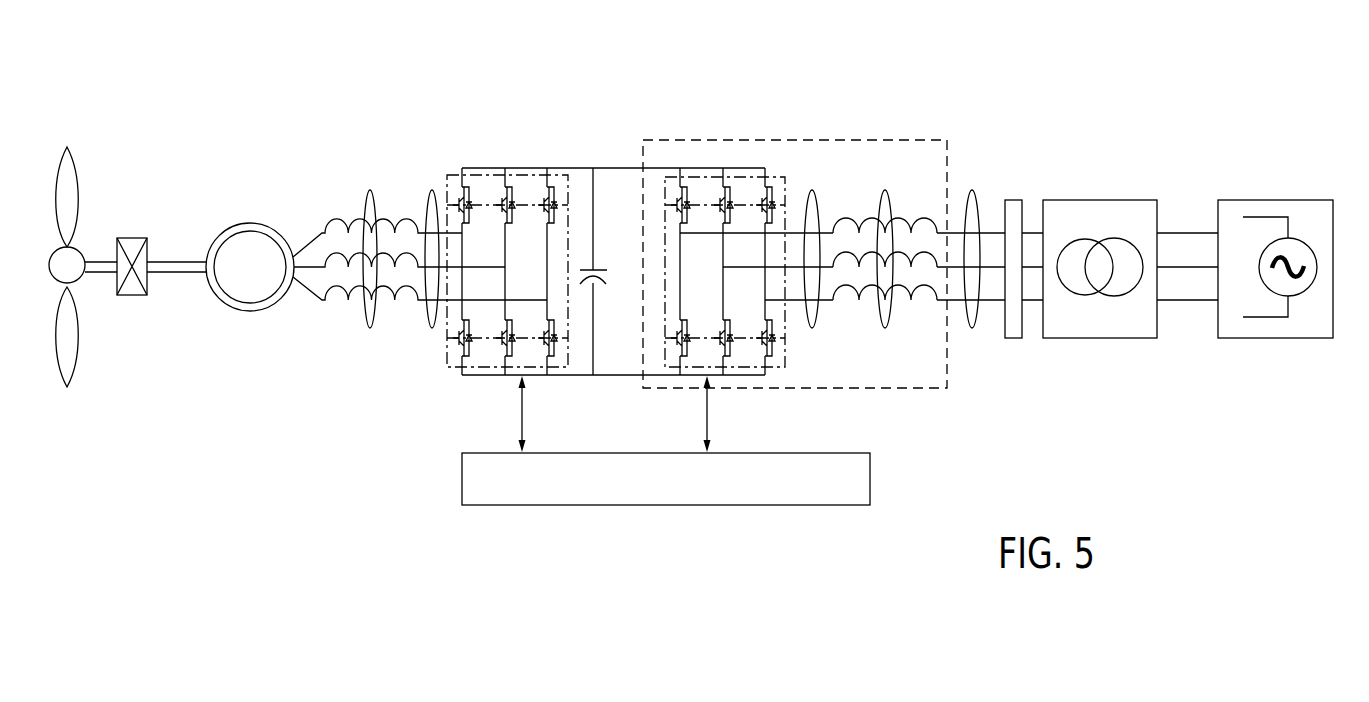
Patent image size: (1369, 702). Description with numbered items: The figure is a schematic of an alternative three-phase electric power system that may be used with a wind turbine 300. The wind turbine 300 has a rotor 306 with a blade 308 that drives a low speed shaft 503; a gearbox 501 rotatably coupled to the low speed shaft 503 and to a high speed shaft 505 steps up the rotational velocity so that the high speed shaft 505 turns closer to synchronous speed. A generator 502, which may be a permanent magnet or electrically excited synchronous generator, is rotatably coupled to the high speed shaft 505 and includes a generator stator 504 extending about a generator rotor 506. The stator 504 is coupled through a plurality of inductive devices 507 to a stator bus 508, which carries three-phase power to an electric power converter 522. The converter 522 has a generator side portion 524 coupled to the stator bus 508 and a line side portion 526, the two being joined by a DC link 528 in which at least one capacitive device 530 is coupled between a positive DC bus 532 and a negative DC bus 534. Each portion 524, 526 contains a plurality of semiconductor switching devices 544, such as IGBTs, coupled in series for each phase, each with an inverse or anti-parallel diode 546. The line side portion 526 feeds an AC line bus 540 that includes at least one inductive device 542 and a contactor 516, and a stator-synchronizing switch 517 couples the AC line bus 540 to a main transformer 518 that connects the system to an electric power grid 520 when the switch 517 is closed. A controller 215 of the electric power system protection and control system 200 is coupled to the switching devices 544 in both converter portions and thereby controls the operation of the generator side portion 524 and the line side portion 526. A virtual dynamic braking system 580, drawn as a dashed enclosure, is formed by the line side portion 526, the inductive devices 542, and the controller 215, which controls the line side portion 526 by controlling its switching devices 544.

The wind turbine 300 is at (155, 138).
The rotor 306 is at (100, 228).
The rotor blade 308 is at (70, 383).
The low speed shaft 503 is at (102, 273).
The gearbox 501 is at (133, 296).
The high speed shaft 505 is at (177, 273).
The generator 502 is at (253, 170).
The generator stator 504 is at (268, 223).
The generator rotor 506 is at (232, 282).
The inductive devices 507 is at (369, 192).
The stator bus 508 is at (431, 192).
The electric power converter 522 is at (530, 115).
The generator side portion 524 is at (480, 381).
The line side portion 526 is at (673, 158).
The DC link 528 is at (587, 148).
The capacitive device 530 is at (585, 285).
The positive DC bus 532 is at (620, 169).
The negative DC bus 534 is at (612, 376).
The semiconductor switching devices 544 is at (463, 202).
The anti-parallel diode 546 is at (471, 200).
The AC line bus 540 is at (812, 192).
The inductive device 542 is at (885, 192).
The virtual dynamic braking system 580 is at (947, 140).
The line contactor 516 is at (972, 190).
The stator-synchronizing switch 517 is at (1013, 200).
The main transformer 518 is at (1102, 200).
The electric power grid 520 is at (1277, 200).
The electric power system protection and control system 200 is at (604, 515).
The controller 215 is at (652, 492).